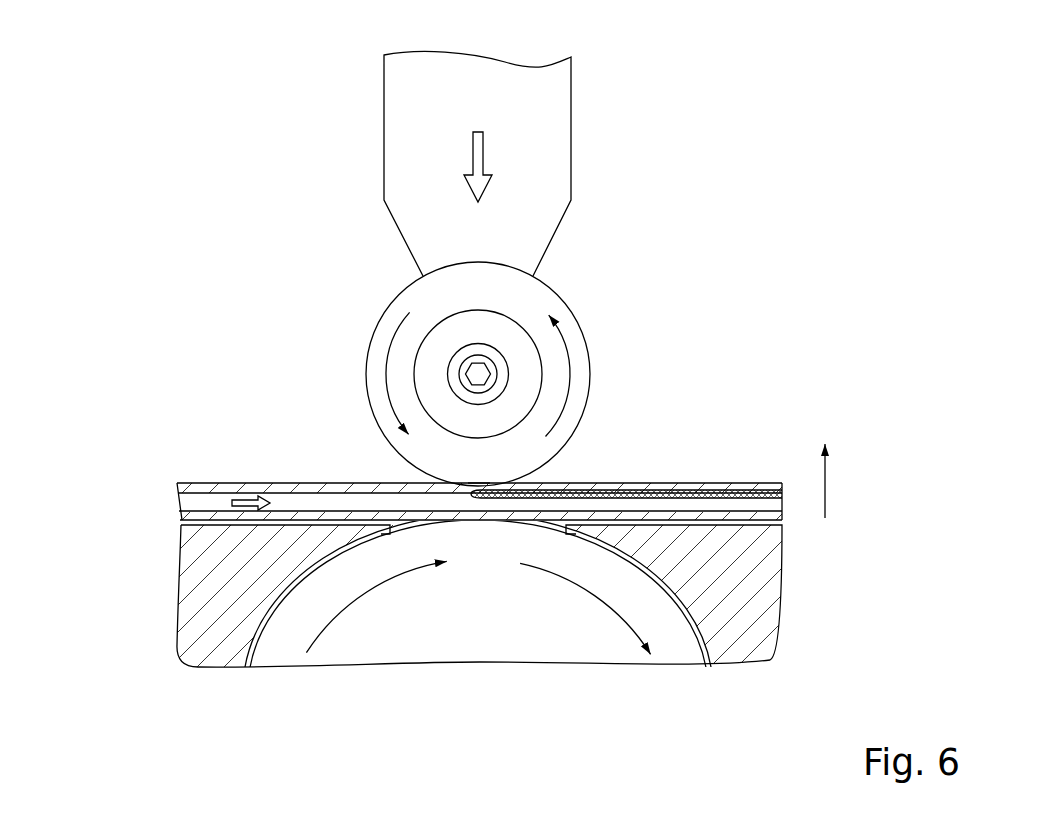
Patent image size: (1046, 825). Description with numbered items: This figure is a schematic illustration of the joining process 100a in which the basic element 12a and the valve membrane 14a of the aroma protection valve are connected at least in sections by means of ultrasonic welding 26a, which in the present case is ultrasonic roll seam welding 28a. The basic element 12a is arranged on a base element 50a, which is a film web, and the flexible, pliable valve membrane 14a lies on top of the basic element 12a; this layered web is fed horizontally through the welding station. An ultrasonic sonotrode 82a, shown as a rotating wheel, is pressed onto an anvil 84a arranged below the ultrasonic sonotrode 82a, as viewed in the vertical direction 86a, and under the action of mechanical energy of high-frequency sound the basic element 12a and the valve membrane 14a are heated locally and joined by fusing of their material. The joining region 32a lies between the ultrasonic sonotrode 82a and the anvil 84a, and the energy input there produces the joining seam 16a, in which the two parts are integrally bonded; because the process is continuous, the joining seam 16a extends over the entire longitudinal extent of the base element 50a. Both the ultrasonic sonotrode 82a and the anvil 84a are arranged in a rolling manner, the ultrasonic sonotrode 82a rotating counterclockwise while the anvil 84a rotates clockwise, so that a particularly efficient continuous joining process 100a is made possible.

The joining process 100a is at (180, 126).
The ultrasonic welding 26a is at (245, 158).
The ultrasonic roll seam welding 28a is at (307, 192).
The ultrasonic sonotrode 82a is at (452, 298).
The joining region 32a is at (487, 478).
The joining seam 16a is at (667, 494).
The valve membrane 14a is at (182, 488).
The basic element 12a is at (182, 506).
The base element 50a is at (188, 517).
The anvil 84a is at (485, 623).
The vertical direction 86a is at (826, 486).